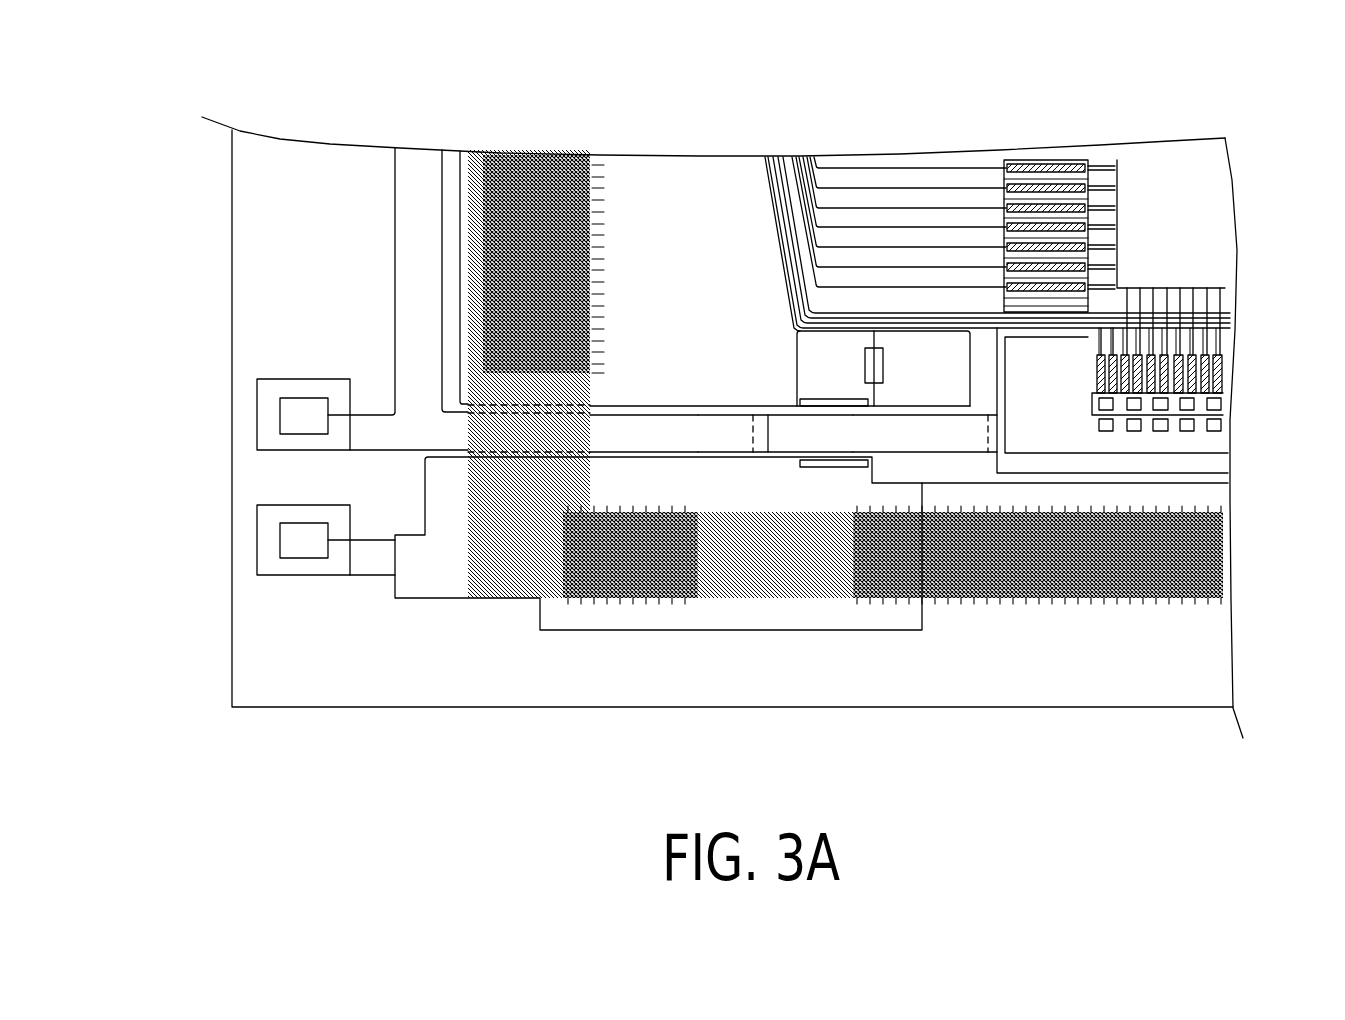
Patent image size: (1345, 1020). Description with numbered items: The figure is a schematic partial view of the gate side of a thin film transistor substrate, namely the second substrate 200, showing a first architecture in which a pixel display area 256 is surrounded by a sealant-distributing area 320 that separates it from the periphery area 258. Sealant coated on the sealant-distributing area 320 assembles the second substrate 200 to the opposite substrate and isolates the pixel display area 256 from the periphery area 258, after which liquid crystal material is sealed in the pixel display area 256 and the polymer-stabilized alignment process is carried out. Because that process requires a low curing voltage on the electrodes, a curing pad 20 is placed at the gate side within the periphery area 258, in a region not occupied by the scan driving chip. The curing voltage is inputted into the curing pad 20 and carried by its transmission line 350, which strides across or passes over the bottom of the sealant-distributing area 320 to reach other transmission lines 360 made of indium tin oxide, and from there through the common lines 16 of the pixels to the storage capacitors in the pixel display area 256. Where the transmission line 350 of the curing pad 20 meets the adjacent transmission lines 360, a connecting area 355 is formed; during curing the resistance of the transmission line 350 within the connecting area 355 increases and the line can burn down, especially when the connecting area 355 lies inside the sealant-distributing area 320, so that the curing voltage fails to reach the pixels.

The second substrate 200 is at (1053, 714).
The periphery area 258 is at (327, 263).
The pixel display area 256 is at (710, 265).
The curing pad 20 is at (282, 402).
The sealant-distributing area 320 is at (1225, 582).
The transmission line 350 is at (630, 433).
The connecting area 355 is at (762, 433).
The other transmission lines 360 is at (900, 433).
The common lines 16 is at (1198, 455).